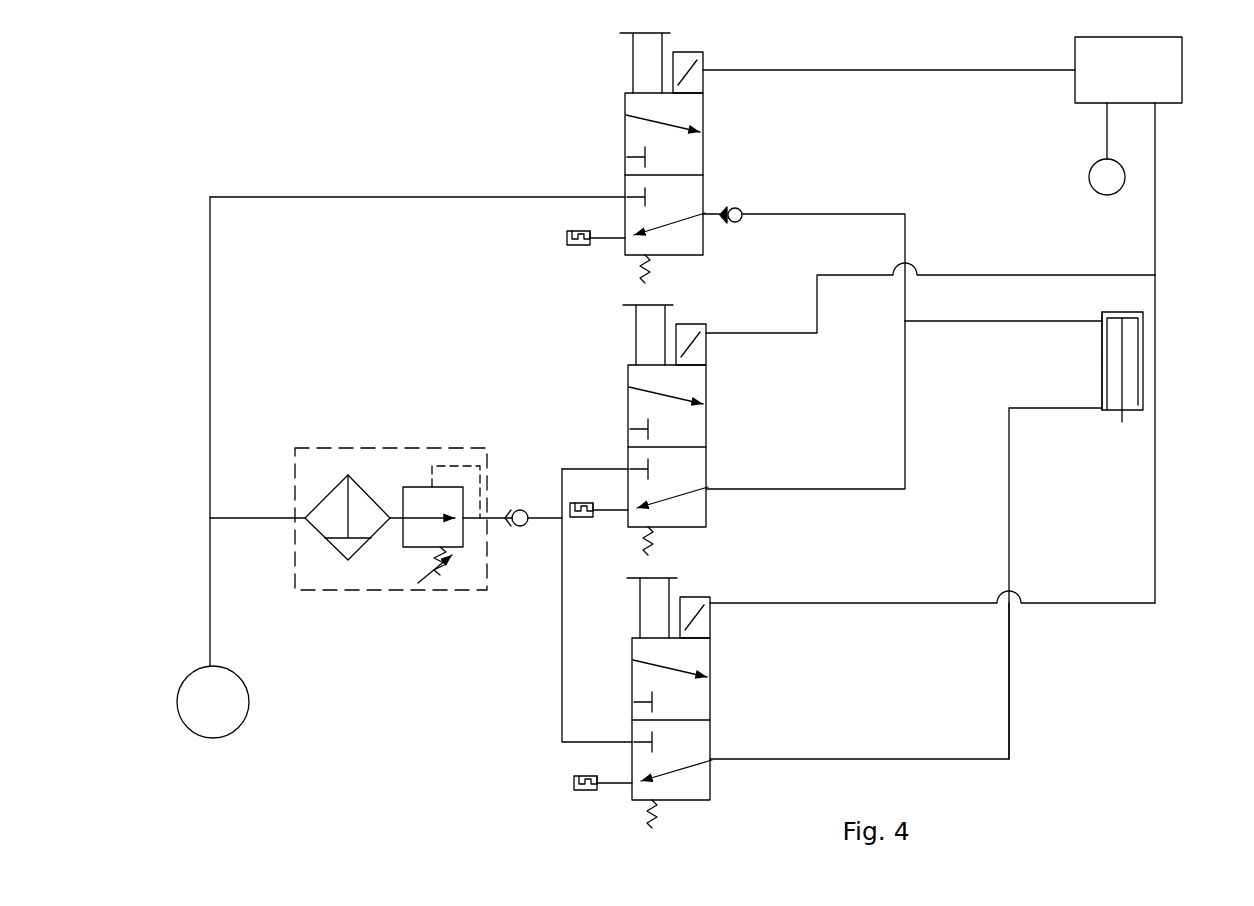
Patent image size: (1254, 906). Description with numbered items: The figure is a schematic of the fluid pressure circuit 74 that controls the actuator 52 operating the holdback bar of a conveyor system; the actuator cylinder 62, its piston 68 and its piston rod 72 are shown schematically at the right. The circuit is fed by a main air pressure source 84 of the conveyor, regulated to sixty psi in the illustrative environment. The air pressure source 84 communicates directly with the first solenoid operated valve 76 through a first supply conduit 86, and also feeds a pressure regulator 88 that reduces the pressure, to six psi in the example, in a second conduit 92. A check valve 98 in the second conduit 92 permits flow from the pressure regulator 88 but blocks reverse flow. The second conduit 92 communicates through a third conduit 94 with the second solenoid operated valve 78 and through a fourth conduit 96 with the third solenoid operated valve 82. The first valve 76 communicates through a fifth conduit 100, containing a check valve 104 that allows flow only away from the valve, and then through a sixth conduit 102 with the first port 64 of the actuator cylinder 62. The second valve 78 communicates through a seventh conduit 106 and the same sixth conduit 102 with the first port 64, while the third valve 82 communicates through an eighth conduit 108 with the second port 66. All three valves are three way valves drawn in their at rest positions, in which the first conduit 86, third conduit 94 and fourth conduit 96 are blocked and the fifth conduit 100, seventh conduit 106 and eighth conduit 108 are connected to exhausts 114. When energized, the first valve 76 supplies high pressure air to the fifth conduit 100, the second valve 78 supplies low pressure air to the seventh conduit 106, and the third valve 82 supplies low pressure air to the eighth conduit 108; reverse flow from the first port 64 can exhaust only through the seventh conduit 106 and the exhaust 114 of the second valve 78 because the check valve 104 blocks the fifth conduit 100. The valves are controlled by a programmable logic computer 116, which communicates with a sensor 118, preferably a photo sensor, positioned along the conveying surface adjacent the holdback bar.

The actuator 52 is at (1141, 367).
The actuator cylinder 62 is at (1143, 345).
The first port 64 is at (1100, 312).
The second port 66 is at (1100, 410).
The piston 68 is at (1133, 317).
The piston rod 72 is at (1125, 416).
The fluid pressure circuit 74 is at (1044, 681).
The first solenoid operated valve 76 is at (625, 135).
The second solenoid operated valve 78 is at (628, 390).
The third solenoid operated valve 82 is at (632, 680).
The air pressure source 84 is at (238, 705).
The first supply conduit 86 is at (305, 197).
The pressure regulator 88 is at (312, 446).
The second conduit 92 is at (545, 510).
The third conduit 94 is at (590, 463).
The fourth conduit 96 is at (560, 625).
The check valve 98 is at (518, 528).
The fifth conduit 100 is at (813, 213).
The sixth conduit 102 is at (965, 321).
The check valve 104 is at (737, 207).
The seventh conduit 106 is at (800, 487).
The eighth conduit 108 is at (812, 758).
The exhaust 114 is at (572, 245).
The programmable logic computer 116 is at (1100, 81).
The sensor 118 is at (1095, 177).